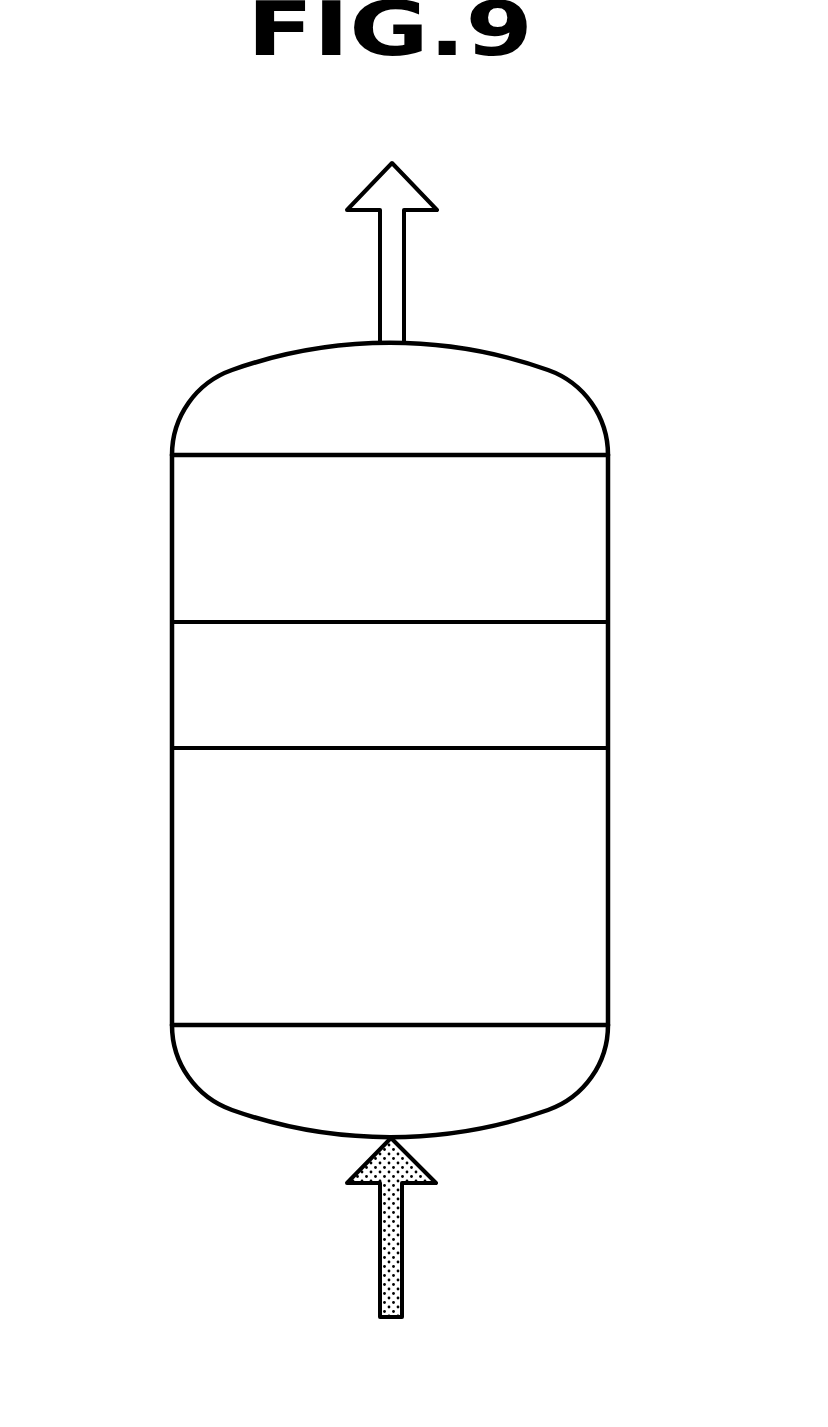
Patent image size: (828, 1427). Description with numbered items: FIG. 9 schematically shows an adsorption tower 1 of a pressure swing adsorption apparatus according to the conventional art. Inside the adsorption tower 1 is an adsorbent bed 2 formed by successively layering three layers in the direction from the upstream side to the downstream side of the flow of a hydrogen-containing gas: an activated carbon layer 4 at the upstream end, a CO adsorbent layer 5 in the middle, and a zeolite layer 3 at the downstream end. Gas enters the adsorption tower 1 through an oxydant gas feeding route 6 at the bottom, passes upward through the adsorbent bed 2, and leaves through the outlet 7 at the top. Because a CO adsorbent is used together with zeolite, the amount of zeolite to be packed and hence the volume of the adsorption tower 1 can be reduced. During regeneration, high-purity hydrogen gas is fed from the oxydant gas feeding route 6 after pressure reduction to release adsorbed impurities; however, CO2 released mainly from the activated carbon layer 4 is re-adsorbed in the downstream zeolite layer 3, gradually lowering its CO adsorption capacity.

The adsorption tower 1 is at (152, 556).
The adsorbent bed 2 is at (180, 833).
The zeolite layer 3 is at (600, 559).
The activated carbon layer 4 is at (599, 932).
The CO adsorbent layer 5 is at (600, 695).
The oxydant gas feeding route 6 is at (402, 1245).
The product gas outlet flow 7 is at (404, 257).